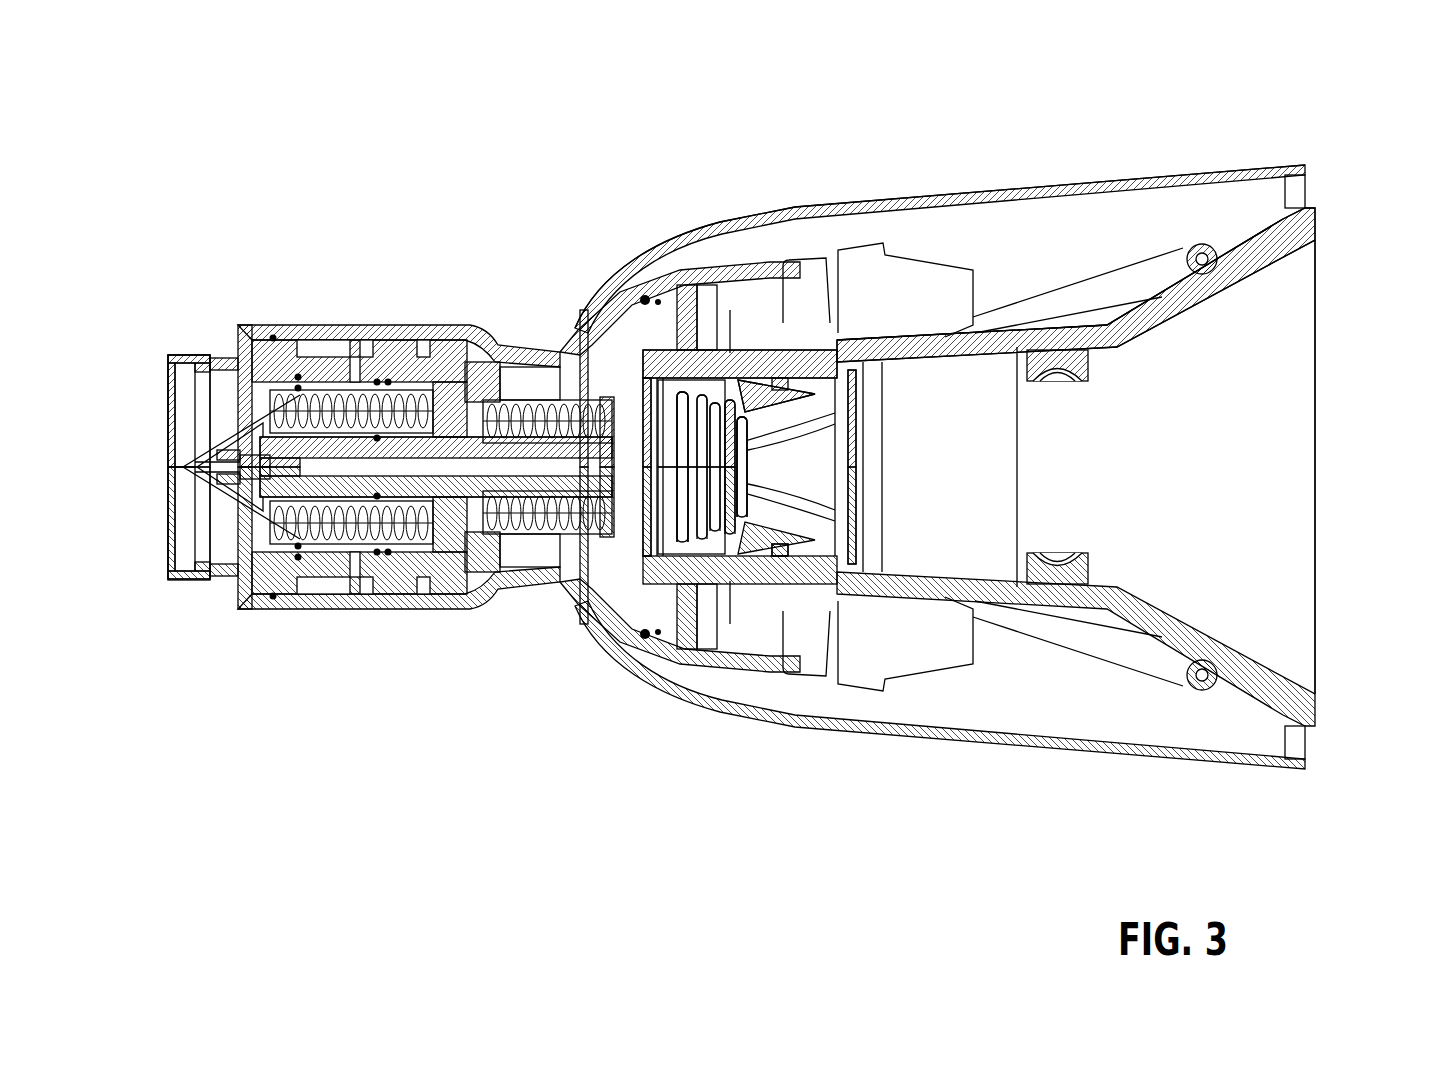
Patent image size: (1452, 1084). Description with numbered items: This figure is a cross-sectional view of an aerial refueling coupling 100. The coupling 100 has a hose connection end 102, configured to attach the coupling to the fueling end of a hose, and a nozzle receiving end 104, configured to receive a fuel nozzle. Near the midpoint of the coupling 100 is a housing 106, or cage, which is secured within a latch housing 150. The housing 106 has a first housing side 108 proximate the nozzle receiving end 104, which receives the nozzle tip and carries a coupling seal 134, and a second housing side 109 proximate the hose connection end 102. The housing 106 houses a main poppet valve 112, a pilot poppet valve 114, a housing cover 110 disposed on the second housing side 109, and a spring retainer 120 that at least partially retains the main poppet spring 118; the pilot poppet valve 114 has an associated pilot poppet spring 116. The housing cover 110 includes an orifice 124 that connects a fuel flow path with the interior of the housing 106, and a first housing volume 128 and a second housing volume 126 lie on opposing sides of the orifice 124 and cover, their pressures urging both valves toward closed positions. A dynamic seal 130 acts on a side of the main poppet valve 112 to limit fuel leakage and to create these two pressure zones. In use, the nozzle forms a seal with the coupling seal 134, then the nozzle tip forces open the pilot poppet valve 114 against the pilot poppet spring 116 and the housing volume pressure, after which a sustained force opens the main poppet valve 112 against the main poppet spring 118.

The aerial refueling coupling 100 is at (567, 137).
The hose connection end 102 is at (160, 472).
The nozzle receiving end 104 is at (1335, 462).
The housing 106 is at (746, 356).
The first housing side 108 is at (1003, 488).
The second housing side 109 is at (673, 462).
The housing cover 110 is at (720, 410).
The main poppet valve 112 is at (815, 398).
The pilot poppet valve 114 is at (748, 456).
The pilot poppet spring 116 is at (747, 424).
The main poppet spring 118 is at (682, 396).
The spring retainer 120 is at (645, 392).
The orifice 124 is at (717, 478).
The second housing volume 126 is at (690, 470).
The first housing volume 128 is at (740, 530).
The dynamic seal 130 is at (779, 553).
The coupling seal 134 is at (863, 381).
The latch housing 150 is at (893, 567).